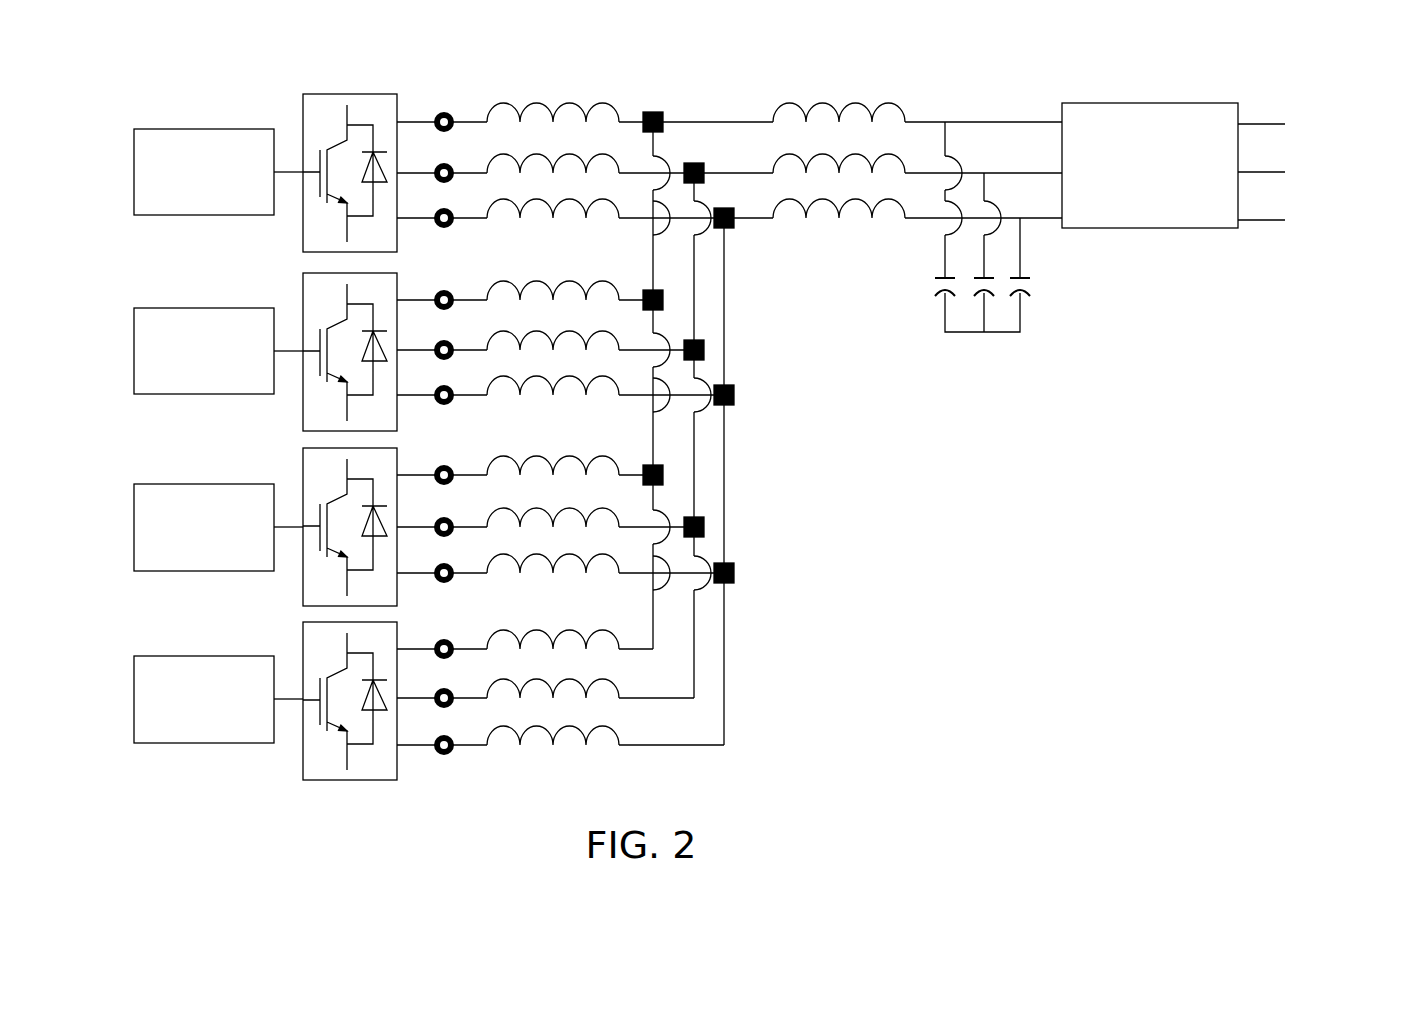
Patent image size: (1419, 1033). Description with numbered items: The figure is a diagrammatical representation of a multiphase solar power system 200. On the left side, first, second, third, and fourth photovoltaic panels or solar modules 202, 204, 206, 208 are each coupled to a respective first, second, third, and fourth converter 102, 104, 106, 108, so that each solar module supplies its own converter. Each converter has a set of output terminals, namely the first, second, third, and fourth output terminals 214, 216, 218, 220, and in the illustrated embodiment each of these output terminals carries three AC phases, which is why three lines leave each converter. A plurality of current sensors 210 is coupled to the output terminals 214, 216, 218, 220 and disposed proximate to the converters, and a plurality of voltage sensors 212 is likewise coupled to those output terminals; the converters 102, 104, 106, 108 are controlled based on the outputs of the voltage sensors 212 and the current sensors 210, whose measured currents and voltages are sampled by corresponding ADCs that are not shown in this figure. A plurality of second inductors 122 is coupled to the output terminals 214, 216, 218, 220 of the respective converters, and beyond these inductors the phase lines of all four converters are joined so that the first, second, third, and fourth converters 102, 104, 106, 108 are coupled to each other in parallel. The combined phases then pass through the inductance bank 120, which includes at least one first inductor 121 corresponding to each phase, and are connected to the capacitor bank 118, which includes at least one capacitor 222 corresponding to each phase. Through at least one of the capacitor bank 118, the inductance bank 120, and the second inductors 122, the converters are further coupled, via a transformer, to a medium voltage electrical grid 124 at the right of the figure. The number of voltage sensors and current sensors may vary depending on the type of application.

The power system 200 is at (1120, 733).
The first photovoltaic panel/solar module 202 is at (175, 128).
The second photovoltaic panel/solar module 204 is at (175, 307).
The third photovoltaic panel/solar module 206 is at (174, 484).
The fourth photovoltaic panel/solar module 208 is at (174, 656).
The first converter 102 is at (330, 94).
The second converter 104 is at (303, 292).
The third converter 106 is at (303, 468).
The fourth converter 108 is at (303, 645).
The current sensors 210 is at (451, 110).
The first output terminals 214 is at (418, 160).
The second output terminals 216 is at (420, 340).
The third output terminals 218 is at (418, 518).
The fourth output terminals 220 is at (418, 695).
The second inductors 122 is at (541, 100).
The voltage sensors 212 is at (697, 160).
The inductance bank 120 is at (830, 156).
The first inductor 121 is at (868, 208).
The capacitor 222 is at (1028, 278).
The capacitor bank 118 is at (1001, 357).
The medium voltage electrical grid 124 is at (1350, 196).